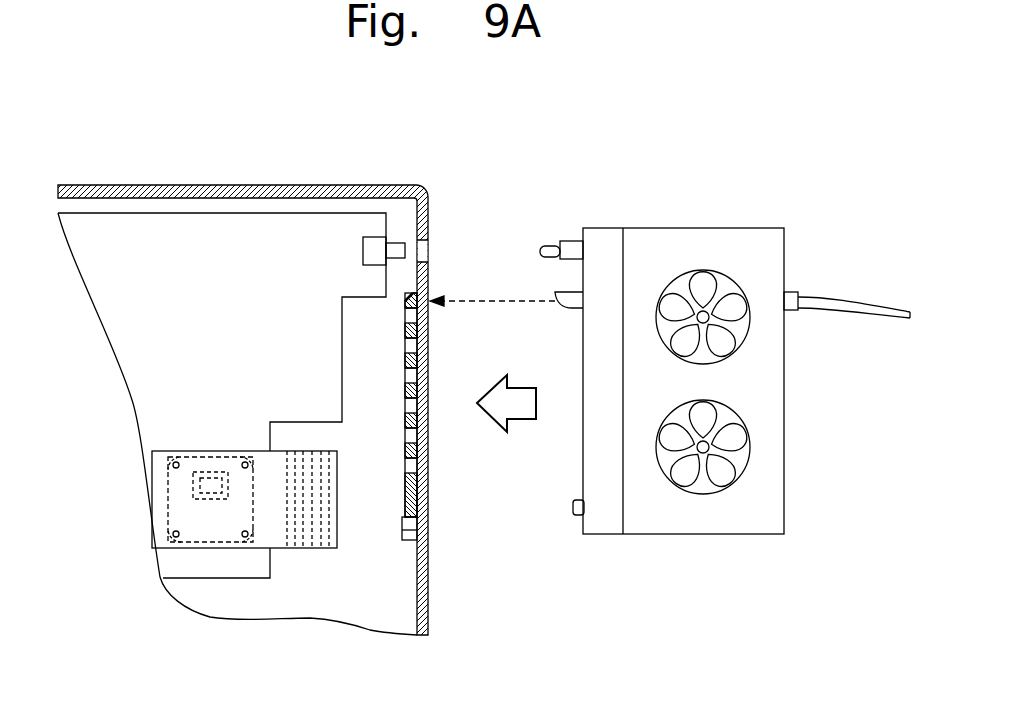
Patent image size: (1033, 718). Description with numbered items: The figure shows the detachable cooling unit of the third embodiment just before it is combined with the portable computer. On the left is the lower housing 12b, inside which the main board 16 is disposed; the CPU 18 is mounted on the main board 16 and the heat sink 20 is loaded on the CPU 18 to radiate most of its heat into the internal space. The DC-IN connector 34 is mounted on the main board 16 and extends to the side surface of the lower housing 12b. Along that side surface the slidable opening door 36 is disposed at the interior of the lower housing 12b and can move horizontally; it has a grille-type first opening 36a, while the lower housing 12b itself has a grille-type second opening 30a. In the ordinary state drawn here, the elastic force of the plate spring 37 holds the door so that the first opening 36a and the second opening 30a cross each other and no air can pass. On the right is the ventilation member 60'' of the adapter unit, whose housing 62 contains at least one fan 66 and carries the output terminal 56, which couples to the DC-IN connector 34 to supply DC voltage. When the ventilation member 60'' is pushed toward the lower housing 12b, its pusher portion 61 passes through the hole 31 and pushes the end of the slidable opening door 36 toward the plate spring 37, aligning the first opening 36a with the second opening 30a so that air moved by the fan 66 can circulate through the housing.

The main board 16 is at (217, 227).
The lower housing 12b is at (430, 580).
The DC-IN connector 34 is at (371, 248).
The slidable opening door 36 is at (405, 352).
The first opening 36a is at (405, 390).
The hole 31 is at (434, 297).
The second opening 30a is at (426, 452).
The plate spring 37 is at (402, 528).
The heat sink 20 is at (152, 476).
The CPU 18 is at (168, 512).
The ventilation member 60'' is at (716, 330).
The housing 62 is at (760, 507).
The fan 66 is at (740, 430).
The output terminal 56 is at (550, 245).
The pusher portion 61 is at (564, 310).